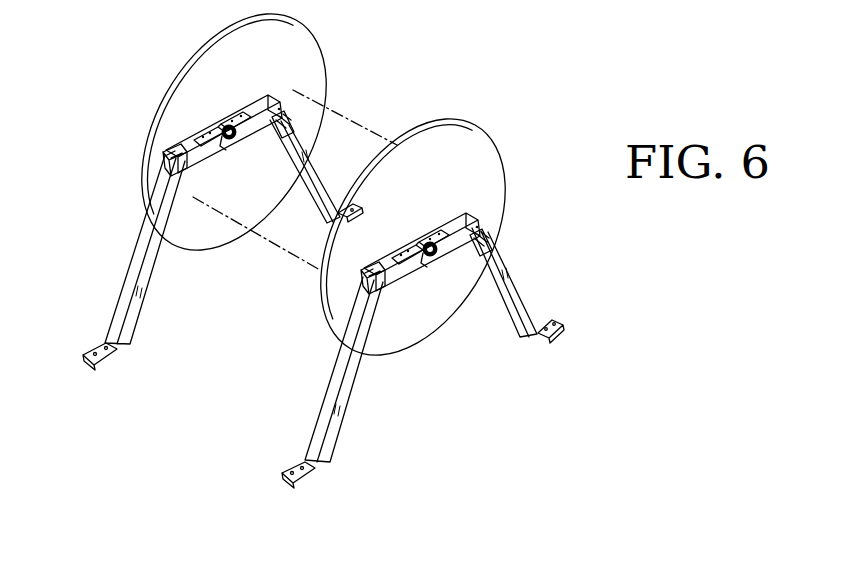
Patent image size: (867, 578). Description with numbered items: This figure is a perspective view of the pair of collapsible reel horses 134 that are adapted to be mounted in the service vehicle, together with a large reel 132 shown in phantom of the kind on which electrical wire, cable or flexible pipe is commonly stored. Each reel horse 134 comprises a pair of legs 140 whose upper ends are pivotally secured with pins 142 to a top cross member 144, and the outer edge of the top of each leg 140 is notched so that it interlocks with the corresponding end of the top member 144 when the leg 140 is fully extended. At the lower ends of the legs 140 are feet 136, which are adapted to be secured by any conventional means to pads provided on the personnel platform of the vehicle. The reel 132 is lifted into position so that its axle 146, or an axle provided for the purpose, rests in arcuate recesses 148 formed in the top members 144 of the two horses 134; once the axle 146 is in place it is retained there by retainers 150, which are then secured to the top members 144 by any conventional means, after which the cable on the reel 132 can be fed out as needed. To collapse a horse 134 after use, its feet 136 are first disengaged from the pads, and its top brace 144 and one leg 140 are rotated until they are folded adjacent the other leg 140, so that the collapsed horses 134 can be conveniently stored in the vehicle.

The reel 132 is at (500, 160).
The reel horse 134 is at (329, 267).
The feet 136 is at (350, 207).
The leg 140 is at (300, 135).
The pin 142 is at (313, 60).
The top cross member 144 is at (178, 143).
The axle 146 is at (238, 137).
The arcuate recess 148 is at (234, 146).
The retainer 150 is at (229, 125).